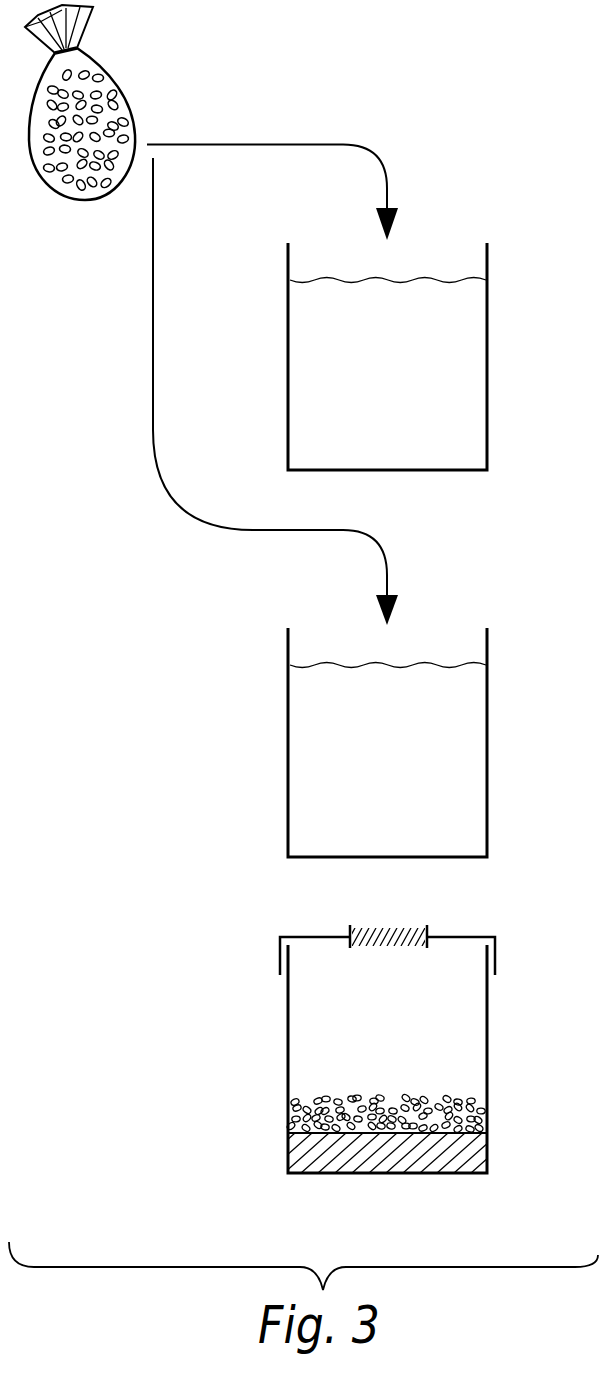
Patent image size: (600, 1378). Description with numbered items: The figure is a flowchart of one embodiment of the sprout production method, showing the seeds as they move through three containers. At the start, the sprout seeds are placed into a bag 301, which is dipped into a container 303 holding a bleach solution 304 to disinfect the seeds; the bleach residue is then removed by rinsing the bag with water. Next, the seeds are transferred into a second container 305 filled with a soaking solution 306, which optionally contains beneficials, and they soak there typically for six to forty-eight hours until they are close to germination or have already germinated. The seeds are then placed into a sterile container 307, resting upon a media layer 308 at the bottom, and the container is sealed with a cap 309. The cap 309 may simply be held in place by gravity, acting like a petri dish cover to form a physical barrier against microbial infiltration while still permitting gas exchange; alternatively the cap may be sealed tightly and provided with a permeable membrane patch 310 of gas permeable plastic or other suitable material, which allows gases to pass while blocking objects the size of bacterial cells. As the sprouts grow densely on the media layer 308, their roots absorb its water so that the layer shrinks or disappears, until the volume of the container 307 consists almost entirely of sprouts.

The bag 301 is at (97, 57).
The container 303 is at (488, 317).
The bleach solution 304 is at (455, 397).
The second container 305 is at (488, 702).
The soaking solution 306 is at (455, 783).
The sterile container 307 is at (488, 1078).
The media layer 308 is at (480, 1153).
The cap 309 is at (470, 937).
The permeable membrane patch 310 is at (370, 928).